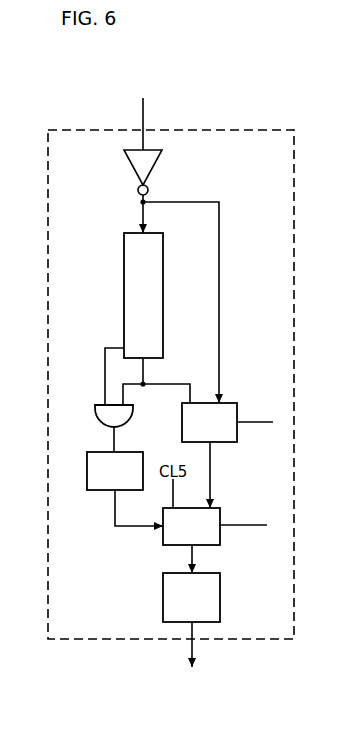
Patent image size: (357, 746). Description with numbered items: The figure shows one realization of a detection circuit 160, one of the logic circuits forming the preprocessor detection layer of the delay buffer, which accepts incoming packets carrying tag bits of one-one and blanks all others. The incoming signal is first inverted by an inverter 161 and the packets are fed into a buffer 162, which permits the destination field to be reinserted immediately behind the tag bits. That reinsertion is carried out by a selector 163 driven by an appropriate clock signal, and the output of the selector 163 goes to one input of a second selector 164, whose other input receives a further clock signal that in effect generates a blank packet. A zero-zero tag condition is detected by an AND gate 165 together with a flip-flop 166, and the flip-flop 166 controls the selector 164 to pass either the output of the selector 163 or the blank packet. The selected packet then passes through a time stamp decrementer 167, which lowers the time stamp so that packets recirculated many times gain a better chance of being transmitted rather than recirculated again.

The detection circuit 160 is at (241, 129).
The inverter 161 is at (152, 157).
The buffer 162 is at (163, 253).
The selector 163 is at (237, 413).
The selector 164 is at (220, 516).
The AND gate 165 is at (100, 413).
The flip-flop 166 is at (127, 452).
The time stamp decrementer 167 is at (220, 582).